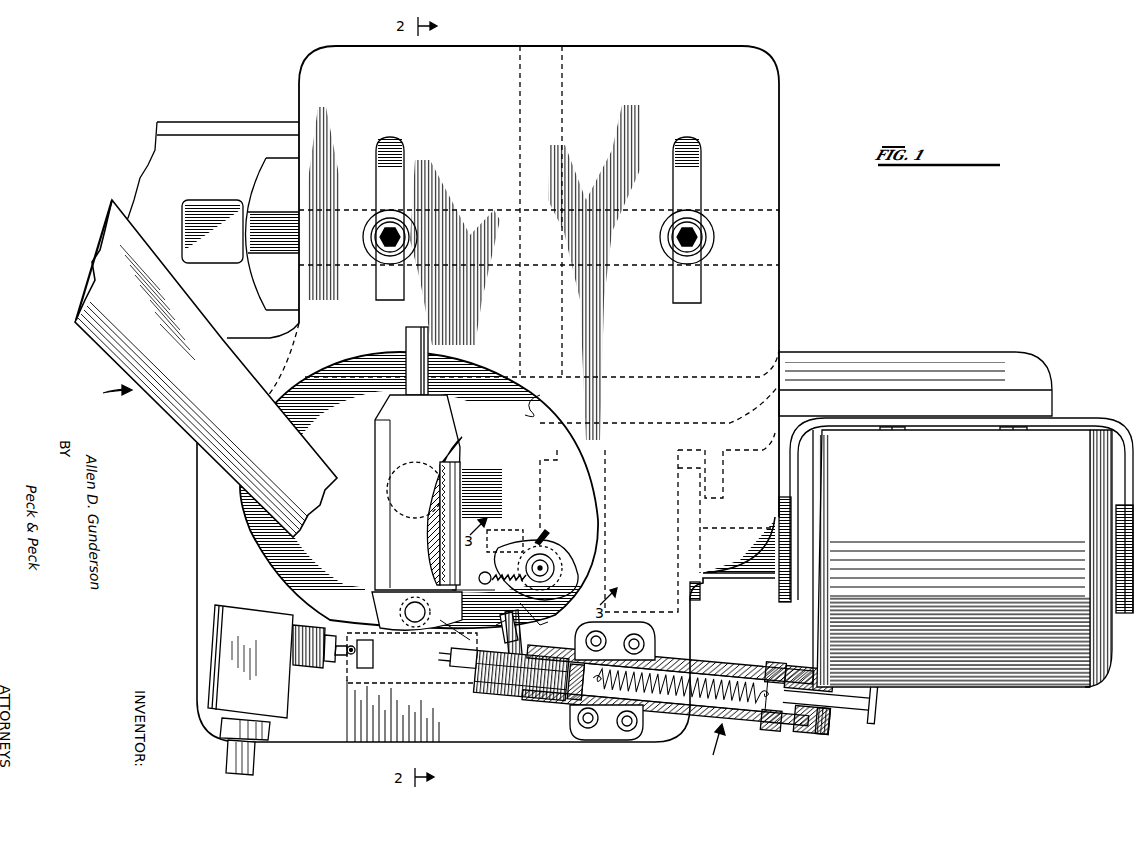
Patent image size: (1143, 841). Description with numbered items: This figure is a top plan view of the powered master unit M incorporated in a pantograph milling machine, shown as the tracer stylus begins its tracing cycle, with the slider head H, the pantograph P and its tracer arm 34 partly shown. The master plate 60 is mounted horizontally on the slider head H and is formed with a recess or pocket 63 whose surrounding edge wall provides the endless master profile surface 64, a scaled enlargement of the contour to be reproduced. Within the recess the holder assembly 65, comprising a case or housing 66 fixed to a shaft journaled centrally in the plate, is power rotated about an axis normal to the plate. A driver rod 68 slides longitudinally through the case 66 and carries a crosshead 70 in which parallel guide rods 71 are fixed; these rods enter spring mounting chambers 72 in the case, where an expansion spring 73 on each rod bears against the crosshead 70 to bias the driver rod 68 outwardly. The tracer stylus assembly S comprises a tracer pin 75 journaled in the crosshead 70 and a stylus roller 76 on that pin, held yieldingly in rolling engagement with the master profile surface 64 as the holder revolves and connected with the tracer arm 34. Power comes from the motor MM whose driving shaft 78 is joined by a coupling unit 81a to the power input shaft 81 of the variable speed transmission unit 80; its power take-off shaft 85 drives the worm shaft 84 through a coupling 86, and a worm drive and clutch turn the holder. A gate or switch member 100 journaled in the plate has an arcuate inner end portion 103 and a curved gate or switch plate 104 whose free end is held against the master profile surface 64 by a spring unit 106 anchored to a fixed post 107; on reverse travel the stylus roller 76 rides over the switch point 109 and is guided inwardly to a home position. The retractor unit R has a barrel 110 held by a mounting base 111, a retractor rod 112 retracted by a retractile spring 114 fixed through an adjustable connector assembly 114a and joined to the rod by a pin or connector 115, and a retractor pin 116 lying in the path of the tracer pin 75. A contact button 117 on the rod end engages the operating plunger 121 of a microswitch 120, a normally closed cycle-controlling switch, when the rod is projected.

The slider head H is at (212, 140).
The powered master unit M is at (798, 311).
The motor MM is at (1042, 686).
The pantograph P is at (106, 396).
The retractor unit R is at (714, 749).
The tracer stylus assembly S is at (360, 600).
The tracer arm 34 is at (100, 255).
The master plate 60 is at (210, 532).
The recess or pocket 63 is at (508, 400).
The master profile surface 64 is at (527, 412).
The holder assembly 65 is at (366, 441).
The case or housing 66 is at (448, 425).
The driver rod 68 is at (408, 345).
The crosshead 70 is at (468, 618).
The guide rods 71 is at (450, 520).
The spring mounting chambers 72 is at (445, 492).
The expansion spring 73 is at (460, 527).
The tracer pin 75 is at (410, 628).
The stylus roller 76 is at (442, 628).
The driving shaft 78 is at (785, 542).
The variable speed transmission unit 80 is at (640, 448).
The power input shaft 81 is at (690, 542).
The coupling unit 81a is at (728, 578).
The worm shaft 84 is at (492, 566).
The power take-off shaft 85 is at (548, 540).
The coupling 86 is at (520, 532).
The gate or switch member 100 is at (558, 590).
The arcuate inner end portion 103 is at (555, 567).
The gate or switch plate 104 is at (522, 625).
The spring unit 106 is at (490, 583).
The fixed post 107 is at (530, 605).
The switch point 109 is at (495, 622).
The barrel 110 is at (700, 645).
The mounting base 111 is at (605, 728).
The retractor rod 112 is at (522, 697).
The retractile spring 114 is at (757, 710).
The adjustable connector assembly 114a is at (830, 688).
The pin or connector 115 is at (578, 690).
The retractor pin 116 is at (531, 648).
The contact button 117 is at (466, 680).
The microswitch 120 is at (255, 605).
The operating plunger 121 is at (345, 658).